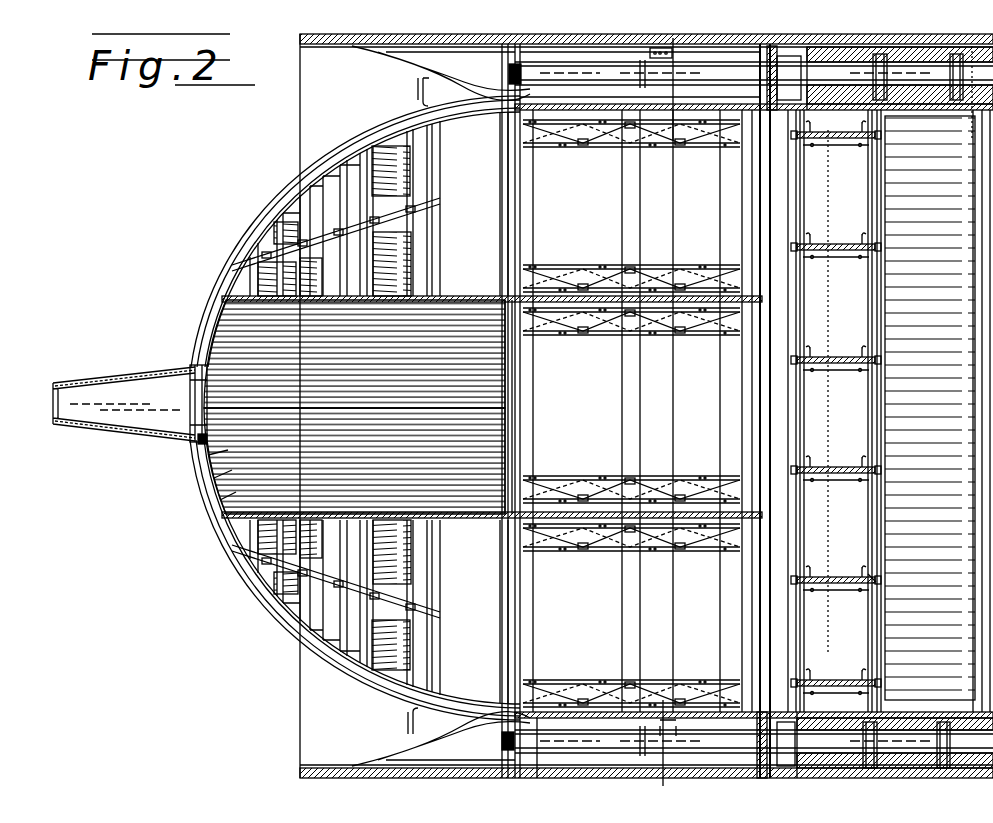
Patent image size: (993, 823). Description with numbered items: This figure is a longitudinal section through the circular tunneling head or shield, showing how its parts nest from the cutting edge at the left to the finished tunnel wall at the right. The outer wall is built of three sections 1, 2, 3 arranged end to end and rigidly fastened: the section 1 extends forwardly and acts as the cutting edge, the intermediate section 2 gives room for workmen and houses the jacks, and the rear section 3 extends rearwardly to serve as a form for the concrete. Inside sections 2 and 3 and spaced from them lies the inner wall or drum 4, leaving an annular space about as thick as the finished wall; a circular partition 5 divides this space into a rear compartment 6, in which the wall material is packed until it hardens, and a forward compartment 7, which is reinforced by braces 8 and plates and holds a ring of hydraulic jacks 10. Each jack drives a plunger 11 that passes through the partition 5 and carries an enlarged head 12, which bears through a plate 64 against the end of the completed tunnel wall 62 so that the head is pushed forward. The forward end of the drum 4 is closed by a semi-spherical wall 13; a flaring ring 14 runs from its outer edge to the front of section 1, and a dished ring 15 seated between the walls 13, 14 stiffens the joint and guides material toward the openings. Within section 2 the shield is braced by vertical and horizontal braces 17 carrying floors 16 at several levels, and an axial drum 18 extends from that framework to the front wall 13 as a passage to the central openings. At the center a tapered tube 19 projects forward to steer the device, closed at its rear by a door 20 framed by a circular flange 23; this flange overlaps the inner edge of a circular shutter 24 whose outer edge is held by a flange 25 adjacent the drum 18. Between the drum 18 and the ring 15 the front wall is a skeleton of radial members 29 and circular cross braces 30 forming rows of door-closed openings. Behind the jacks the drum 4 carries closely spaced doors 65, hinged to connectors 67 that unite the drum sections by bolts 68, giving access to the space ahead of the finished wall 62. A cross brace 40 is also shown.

The outer wall section 1 is at (297, 772).
The intermediate outer wall section 2 is at (540, 748).
The rear outer wall section 3 is at (690, 33).
The inner wall or drum 4 is at (593, 114).
The circular partition 5 is at (779, 126).
The rear compartment 6 is at (782, 692).
The forward compartment 7 is at (640, 76).
The braces 8 is at (599, 739).
The hydraulic jacks 10 is at (754, 410).
The plungers 11 is at (629, 74).
The plunger head 12 is at (803, 40).
The semi-spherical wall 13 is at (212, 294).
The flaring ring 14 is at (356, 48).
The dished ring 15 is at (421, 97).
The floors 16 is at (607, 300).
The vertical and horizontal braces 17 is at (605, 555).
The axial drum 18 is at (393, 514).
The tapered tube 19 is at (141, 378).
The door 20 is at (213, 398).
The circular flange 23 is at (215, 458).
The circular shutter 24 is at (222, 478).
The circular flange 25 is at (228, 498).
The radial members 29 is at (256, 548).
The circular cross braces 30 is at (335, 186).
The drum 40 is at (393, 298).
The tunnel wall 62 is at (895, 431).
The plate 64 is at (832, 52).
The doors 65 is at (852, 418).
The connectors 67 is at (852, 577).
The bolts 68 is at (870, 578).